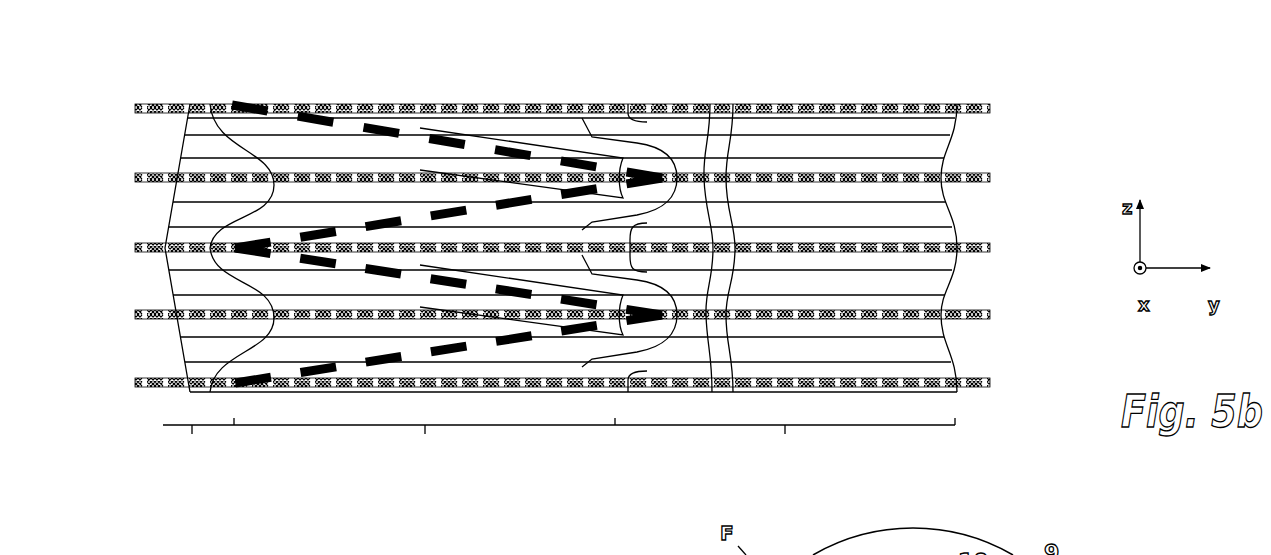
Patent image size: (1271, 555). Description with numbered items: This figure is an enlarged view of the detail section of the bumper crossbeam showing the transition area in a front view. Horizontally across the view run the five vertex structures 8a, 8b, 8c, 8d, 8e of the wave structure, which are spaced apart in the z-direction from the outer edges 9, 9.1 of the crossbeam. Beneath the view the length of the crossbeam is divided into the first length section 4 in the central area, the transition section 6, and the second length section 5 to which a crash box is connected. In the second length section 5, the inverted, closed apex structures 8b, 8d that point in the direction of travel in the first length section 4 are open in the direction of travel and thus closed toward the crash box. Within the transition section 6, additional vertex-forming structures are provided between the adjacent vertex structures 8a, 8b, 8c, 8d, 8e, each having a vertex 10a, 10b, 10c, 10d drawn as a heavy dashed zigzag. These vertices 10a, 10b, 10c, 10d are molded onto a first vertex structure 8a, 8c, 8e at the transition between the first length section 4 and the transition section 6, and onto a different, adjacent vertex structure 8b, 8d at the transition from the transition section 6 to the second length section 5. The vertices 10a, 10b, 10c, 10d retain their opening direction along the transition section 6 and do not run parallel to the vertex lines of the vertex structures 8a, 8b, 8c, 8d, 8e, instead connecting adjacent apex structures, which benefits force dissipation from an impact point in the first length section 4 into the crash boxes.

The first length section 4 is at (198, 445).
The second length section 5 is at (785, 445).
The transition section 6 is at (424, 445).
The vertex structure 8a is at (585, 109).
The vertex structure 8b is at (585, 178).
The vertex structure 8c is at (584, 248).
The vertex structure 8d is at (585, 315).
The vertex structure 8e is at (585, 383).
The outer edge 9 is at (859, 99).
The outer edge 9.1 is at (933, 397).
The vertex 10a is at (382, 122).
The vertex 10b is at (457, 209).
The vertex 10c is at (410, 283).
The vertex 10d is at (352, 362).